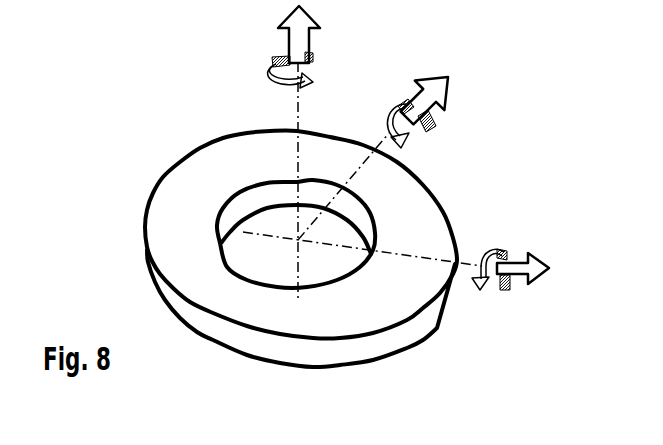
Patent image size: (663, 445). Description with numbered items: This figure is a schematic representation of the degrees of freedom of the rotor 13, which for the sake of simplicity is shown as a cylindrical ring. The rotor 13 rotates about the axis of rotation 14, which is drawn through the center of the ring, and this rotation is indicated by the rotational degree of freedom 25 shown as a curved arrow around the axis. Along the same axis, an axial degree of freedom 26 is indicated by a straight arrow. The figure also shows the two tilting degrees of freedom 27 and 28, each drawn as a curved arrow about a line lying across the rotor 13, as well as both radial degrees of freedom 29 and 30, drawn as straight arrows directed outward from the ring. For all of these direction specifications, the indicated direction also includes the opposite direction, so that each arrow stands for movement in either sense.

The rotor 13 is at (197, 260).
The axis of rotation 14 is at (297, 115).
The rotational degree of freedom 25 is at (304, 78).
The axial degree of freedom 26 is at (286, 34).
The tilting degree of freedom 27 is at (491, 257).
The tilting degree of freedom 28 is at (421, 129).
The radial degree of freedom 29 is at (536, 268).
The radial degree of freedom 30 is at (433, 91).